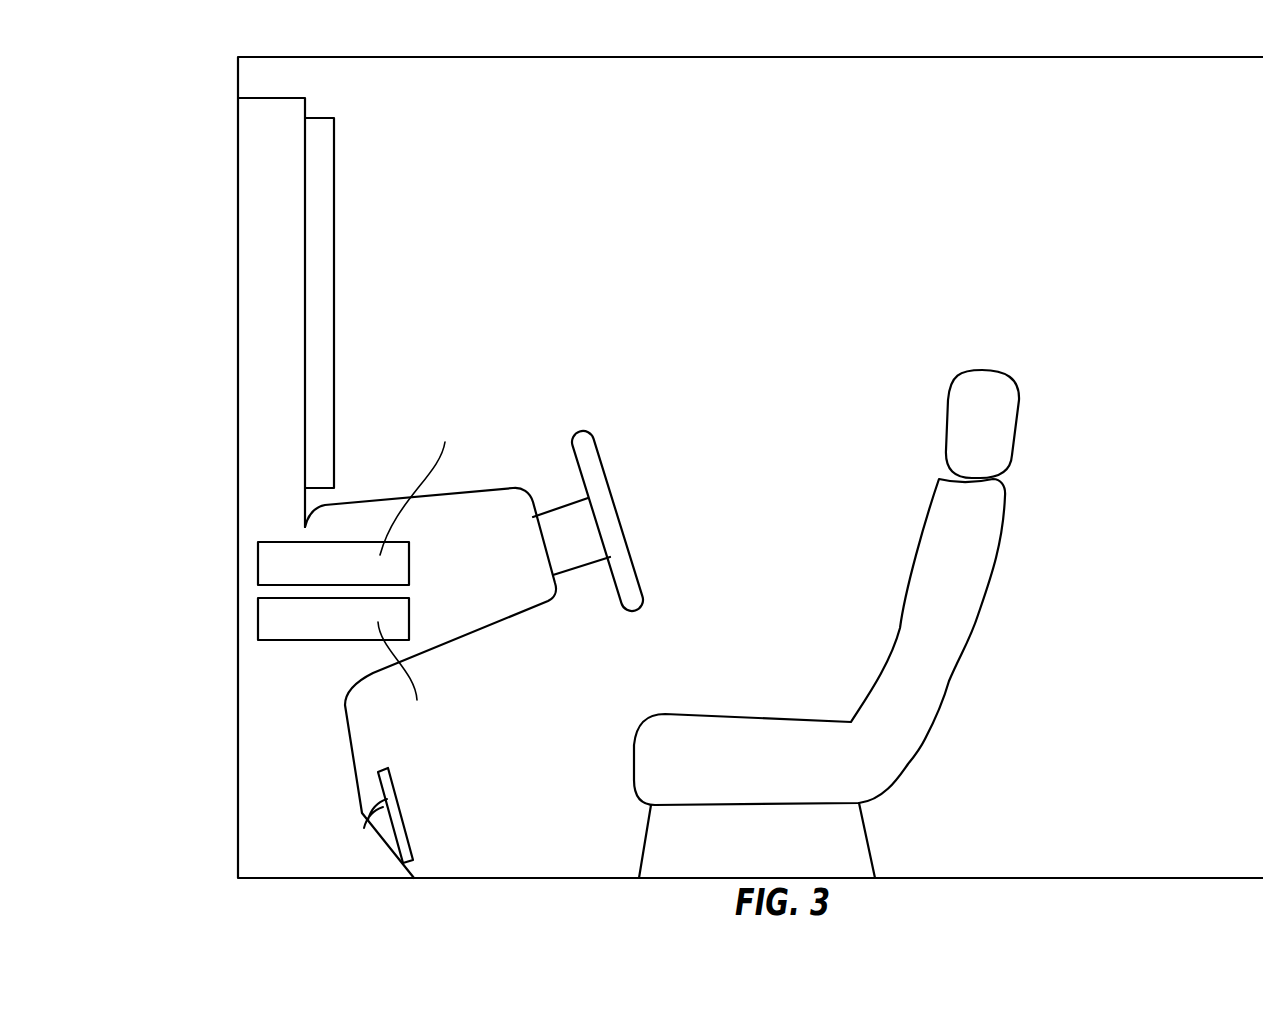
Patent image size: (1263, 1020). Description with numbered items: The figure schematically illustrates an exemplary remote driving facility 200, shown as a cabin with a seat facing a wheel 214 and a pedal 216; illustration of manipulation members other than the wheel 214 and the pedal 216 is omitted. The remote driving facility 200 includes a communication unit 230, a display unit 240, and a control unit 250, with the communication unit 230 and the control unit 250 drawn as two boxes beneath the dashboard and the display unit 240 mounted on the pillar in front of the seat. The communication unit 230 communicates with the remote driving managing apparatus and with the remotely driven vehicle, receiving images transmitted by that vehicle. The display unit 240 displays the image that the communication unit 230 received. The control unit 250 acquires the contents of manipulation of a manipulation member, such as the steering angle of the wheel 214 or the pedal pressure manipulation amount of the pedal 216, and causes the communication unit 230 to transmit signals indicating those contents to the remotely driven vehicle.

The remote driving facility 200 is at (287, 36).
The display unit 240 is at (337, 156).
The wheel 214 is at (597, 445).
The communication unit 230 is at (412, 564).
The control unit 250 is at (412, 622).
The pedal 216 is at (391, 775).